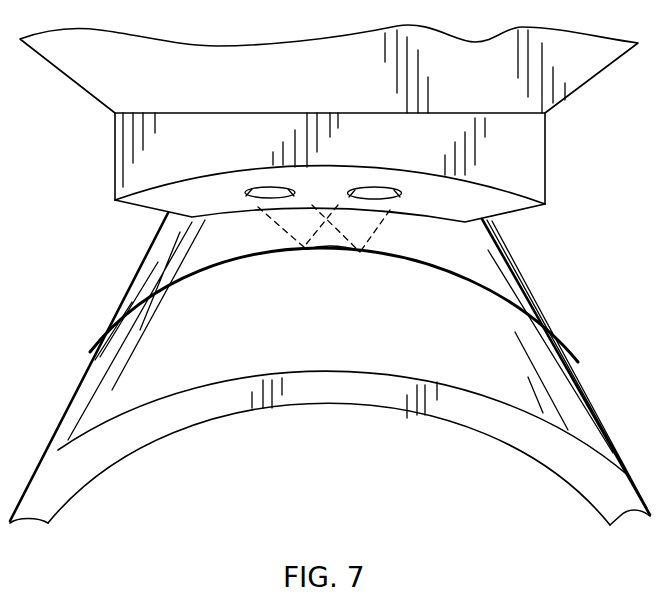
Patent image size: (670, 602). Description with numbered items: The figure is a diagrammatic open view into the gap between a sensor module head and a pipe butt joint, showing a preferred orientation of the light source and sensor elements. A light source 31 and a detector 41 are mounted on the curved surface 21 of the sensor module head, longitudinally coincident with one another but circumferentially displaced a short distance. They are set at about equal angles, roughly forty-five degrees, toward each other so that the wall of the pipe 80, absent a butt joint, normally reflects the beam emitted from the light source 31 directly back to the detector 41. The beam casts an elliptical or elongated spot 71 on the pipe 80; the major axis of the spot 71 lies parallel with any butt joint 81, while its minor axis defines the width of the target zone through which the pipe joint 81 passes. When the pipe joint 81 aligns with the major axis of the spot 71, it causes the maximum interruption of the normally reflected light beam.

The curved surface 21 is at (242, 113).
The light source 31 is at (245, 188).
The detector 41 is at (370, 188).
The spot 71 is at (323, 257).
The butt joint 81 is at (465, 283).
The pipe 80 is at (246, 365).